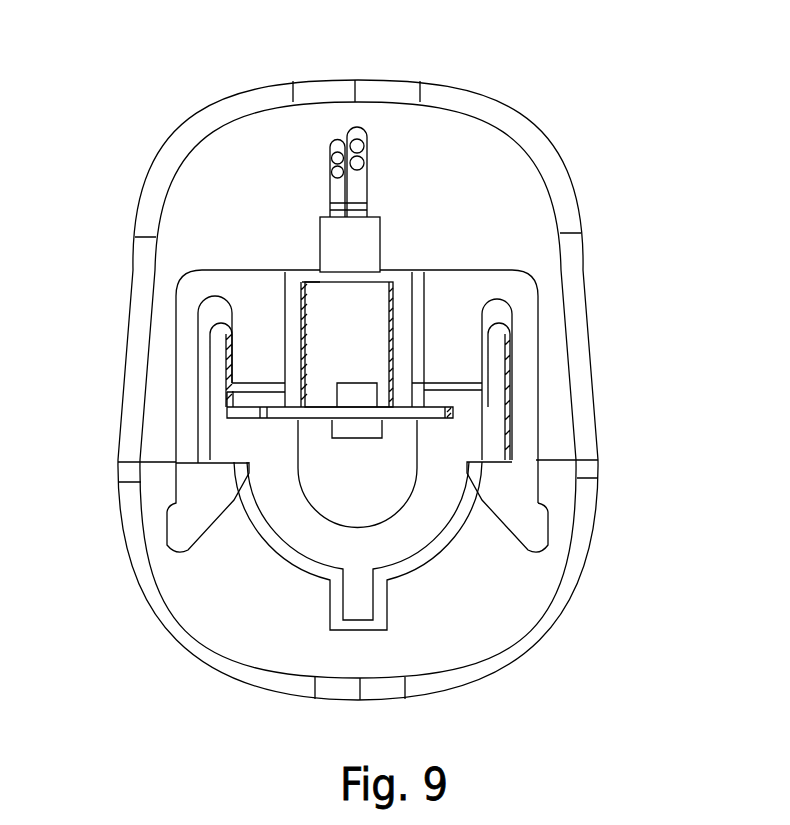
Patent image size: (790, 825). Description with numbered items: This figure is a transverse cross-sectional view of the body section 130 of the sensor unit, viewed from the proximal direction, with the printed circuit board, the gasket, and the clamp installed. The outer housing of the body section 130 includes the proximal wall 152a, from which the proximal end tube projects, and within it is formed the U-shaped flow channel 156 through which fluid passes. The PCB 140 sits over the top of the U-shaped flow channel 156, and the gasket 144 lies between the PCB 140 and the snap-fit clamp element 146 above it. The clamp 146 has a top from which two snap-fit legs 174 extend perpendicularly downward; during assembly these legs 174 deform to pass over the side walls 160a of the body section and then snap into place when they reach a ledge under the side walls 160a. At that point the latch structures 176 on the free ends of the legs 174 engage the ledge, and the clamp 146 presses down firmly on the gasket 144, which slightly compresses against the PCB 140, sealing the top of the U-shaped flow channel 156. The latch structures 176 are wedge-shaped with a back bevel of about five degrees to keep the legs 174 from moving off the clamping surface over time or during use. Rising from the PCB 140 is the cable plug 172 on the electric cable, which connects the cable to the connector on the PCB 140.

The body section 130 is at (158, 86).
The proximal wall 152a is at (482, 152).
The snap-fit clamp element 146 is at (472, 285).
The cable plug 172 is at (330, 243).
The side walls 160a is at (503, 358).
The snap-fit legs 174 is at (527, 372).
The gasket 144 is at (253, 400).
The Printed Circuit Board (PCB) 140 is at (273, 415).
The U-shaped flow channel 156 is at (325, 478).
The latch structures 176 is at (518, 493).